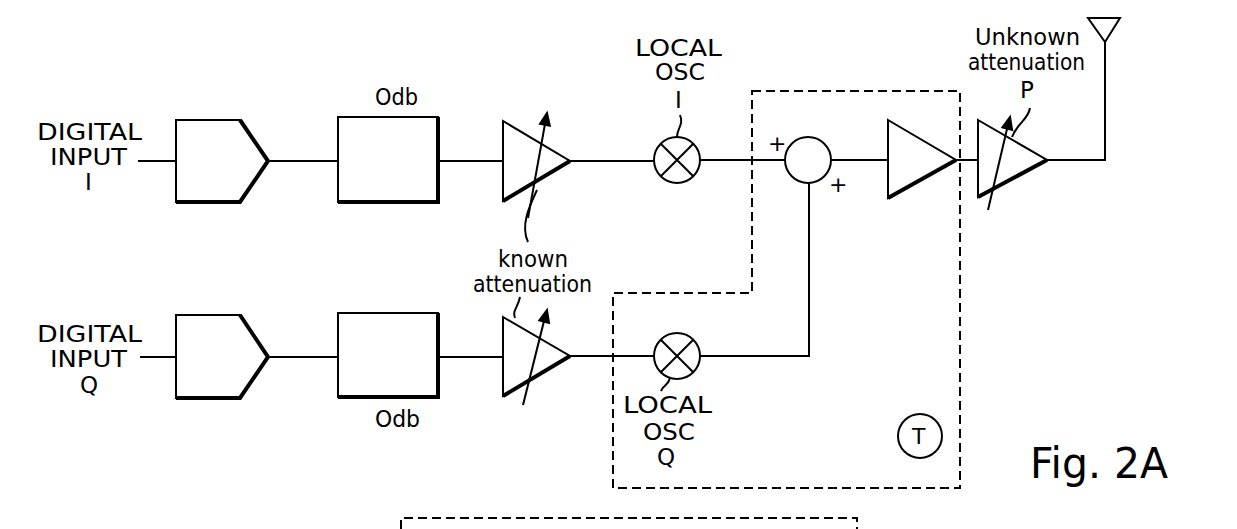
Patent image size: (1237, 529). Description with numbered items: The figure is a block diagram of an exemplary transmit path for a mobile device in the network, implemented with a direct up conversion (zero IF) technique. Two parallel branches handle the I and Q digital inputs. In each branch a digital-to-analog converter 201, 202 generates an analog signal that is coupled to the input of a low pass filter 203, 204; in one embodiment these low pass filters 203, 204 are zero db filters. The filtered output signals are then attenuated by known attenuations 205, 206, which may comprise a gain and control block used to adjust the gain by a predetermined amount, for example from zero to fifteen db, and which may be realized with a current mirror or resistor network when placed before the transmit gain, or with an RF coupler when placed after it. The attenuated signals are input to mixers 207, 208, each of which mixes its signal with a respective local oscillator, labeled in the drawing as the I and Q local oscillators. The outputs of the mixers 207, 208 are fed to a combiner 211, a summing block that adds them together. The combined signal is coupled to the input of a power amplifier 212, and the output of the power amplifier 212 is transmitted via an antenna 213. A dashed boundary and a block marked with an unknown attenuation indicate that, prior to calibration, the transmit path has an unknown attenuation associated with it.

The digital-to-analog converter 201 is at (234, 192).
The digital-to-analog converter 202 is at (234, 387).
The low pass filter 203 is at (428, 191).
The low pass filter 204 is at (428, 387).
The known attenuation 205 is at (555, 150).
The known attenuation 206 is at (553, 366).
The mixer 207 is at (662, 172).
The mixer 208 is at (696, 346).
The combiner 211 is at (814, 139).
The power amplifier 212 is at (917, 200).
The antenna 213 is at (1105, 87).